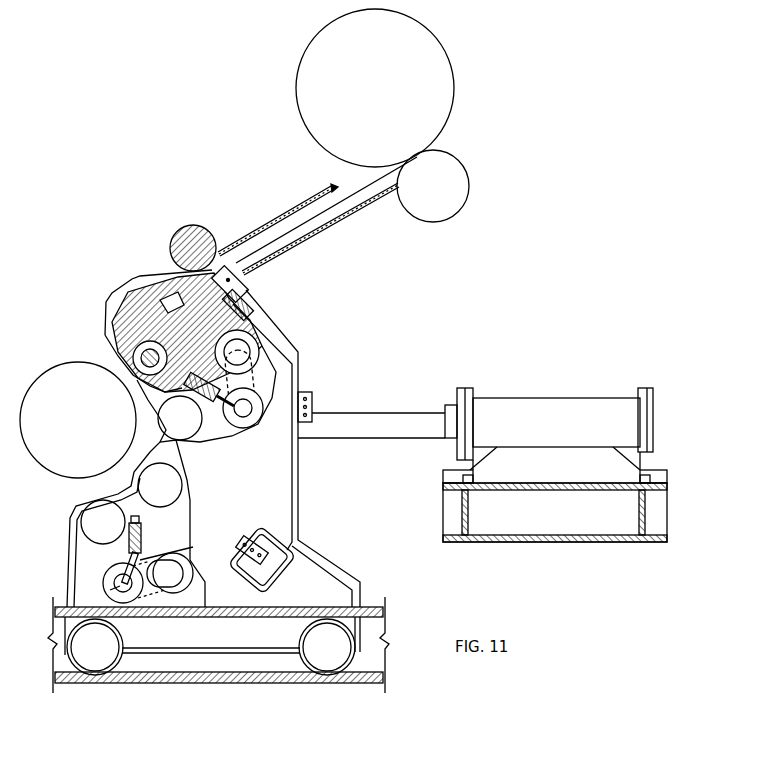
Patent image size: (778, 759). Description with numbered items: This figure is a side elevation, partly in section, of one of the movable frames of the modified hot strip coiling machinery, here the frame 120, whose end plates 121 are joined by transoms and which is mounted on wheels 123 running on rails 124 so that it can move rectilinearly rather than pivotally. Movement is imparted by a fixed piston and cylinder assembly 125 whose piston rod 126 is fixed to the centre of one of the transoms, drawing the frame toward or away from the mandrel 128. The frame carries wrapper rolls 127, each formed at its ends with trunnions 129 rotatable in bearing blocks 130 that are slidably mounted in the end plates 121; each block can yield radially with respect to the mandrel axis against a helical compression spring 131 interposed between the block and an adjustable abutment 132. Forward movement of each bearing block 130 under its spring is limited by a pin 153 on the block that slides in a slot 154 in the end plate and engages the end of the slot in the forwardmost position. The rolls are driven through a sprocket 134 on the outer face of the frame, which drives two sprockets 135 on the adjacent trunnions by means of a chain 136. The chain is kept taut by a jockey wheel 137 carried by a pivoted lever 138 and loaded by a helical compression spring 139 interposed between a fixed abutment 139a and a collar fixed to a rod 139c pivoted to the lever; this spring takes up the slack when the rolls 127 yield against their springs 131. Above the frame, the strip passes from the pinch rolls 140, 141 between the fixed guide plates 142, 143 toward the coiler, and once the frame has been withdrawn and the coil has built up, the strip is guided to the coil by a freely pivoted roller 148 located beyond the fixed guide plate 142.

The frame 120 is at (232, 432).
The end plate 121 is at (298, 478).
The wheels 123 is at (313, 638).
The rails 124 is at (288, 676).
The piston and cylinder assembly 125 is at (567, 400).
The piston rod 126 is at (420, 412).
The wrapper roll 127 is at (147, 423).
The mandrel 128 is at (108, 338).
The trunnion 129 is at (143, 362).
The bearing block 130 is at (118, 323).
The helical compression spring 131 is at (240, 305).
The adjustable abutment 132 is at (241, 282).
The sprocket 134 is at (252, 334).
The sprocket 135 is at (157, 470).
The chain 136 is at (204, 420).
The jockey wheel 137 is at (257, 408).
The pivoted lever 138 is at (160, 607).
The helical compression spring 139 is at (141, 521).
The fixed abutment 139a is at (193, 547).
The rod 139c is at (112, 590).
The pinch roll 140 is at (448, 104).
The pinch roll 141 is at (461, 190).
The fixed guide plate 142 is at (305, 199).
The fixed guide plate 143 is at (335, 222).
The freely pivoted roller 148 is at (206, 231).
The pin 153 is at (130, 305).
The slot 154 is at (172, 300).